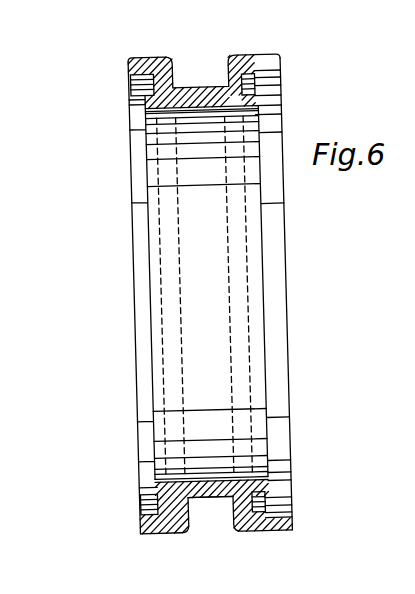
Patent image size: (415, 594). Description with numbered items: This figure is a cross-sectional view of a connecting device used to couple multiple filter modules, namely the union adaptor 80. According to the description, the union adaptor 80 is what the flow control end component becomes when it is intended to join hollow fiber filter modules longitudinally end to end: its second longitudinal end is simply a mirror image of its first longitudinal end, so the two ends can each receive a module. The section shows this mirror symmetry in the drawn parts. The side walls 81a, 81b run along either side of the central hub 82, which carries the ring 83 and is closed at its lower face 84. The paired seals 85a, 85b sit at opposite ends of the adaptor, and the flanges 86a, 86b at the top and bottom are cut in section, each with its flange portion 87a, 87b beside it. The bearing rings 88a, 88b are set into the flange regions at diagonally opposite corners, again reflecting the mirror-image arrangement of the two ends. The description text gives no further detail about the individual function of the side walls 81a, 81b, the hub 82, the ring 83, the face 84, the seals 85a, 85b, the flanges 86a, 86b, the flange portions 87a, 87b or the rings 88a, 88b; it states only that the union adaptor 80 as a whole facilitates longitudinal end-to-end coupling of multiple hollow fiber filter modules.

The union adaptor 80 is at (122, 75).
The first side wall 81a is at (135, 312).
The second side wall 81b is at (287, 237).
The hub 82 is at (157, 202).
The ring 83 is at (264, 121).
The bottom hub face 84 is at (215, 498).
The first seal 85a is at (148, 100).
The second seal 85b is at (267, 482).
The first flange 86a is at (152, 66).
The second flange 86b is at (277, 526).
The first flange portion 87a is at (176, 508).
The second flange portion 87b is at (251, 72).
The first bearing ring 88a is at (148, 83).
The second bearing ring 88b is at (262, 500).